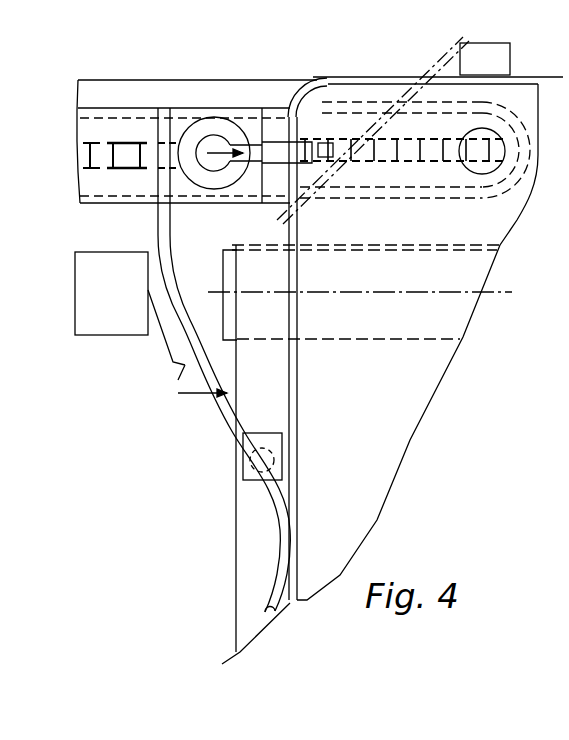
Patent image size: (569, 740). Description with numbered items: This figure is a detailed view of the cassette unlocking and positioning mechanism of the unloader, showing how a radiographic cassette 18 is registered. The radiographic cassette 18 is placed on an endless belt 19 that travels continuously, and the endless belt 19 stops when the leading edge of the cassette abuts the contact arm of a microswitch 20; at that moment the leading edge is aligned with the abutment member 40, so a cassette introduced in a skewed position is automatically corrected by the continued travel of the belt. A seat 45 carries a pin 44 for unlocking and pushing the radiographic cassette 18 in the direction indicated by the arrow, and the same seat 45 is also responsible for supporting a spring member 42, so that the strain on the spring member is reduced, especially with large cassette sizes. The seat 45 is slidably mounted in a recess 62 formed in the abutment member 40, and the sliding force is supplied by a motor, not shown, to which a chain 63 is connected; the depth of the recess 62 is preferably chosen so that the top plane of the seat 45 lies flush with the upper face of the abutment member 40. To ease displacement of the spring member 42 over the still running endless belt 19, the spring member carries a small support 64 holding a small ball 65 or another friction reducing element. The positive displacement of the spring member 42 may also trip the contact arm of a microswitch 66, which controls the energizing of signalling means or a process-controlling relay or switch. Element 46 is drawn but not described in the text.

The abutment member 40 is at (117, 92).
The recess 62 is at (132, 130).
The chain 63 is at (132, 157).
The seat 45 is at (237, 118).
The pin 44 is at (271, 153).
The chain drive 46 is at (330, 150).
The microswitch 20 is at (500, 70).
The radiographic cassette 18 is at (310, 222).
The endless belt 19 is at (245, 550).
The microswitch 66 is at (105, 315).
The spring member 42 is at (210, 405).
The small support 64 is at (257, 467).
The small ball 65 is at (287, 460).